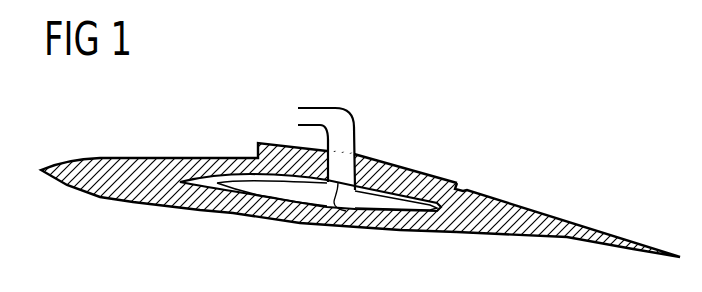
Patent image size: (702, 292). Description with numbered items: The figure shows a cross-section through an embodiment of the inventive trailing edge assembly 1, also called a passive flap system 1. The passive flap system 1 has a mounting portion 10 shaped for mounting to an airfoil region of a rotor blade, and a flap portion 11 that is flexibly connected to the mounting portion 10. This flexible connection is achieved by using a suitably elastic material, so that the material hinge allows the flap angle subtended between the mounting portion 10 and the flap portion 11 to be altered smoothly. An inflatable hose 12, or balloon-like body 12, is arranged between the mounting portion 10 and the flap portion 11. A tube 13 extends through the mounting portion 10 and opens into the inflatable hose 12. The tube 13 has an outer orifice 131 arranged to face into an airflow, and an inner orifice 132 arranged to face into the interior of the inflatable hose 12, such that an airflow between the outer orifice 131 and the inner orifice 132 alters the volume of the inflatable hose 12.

The trailing edge assembly 1 is at (478, 113).
The mounting portion 10 is at (160, 177).
The flap portion 11 is at (577, 230).
The inflatable hose 12 is at (355, 203).
The tube 13 is at (345, 128).
The outer orifice 131 is at (296, 110).
The inner orifice 132 is at (338, 188).